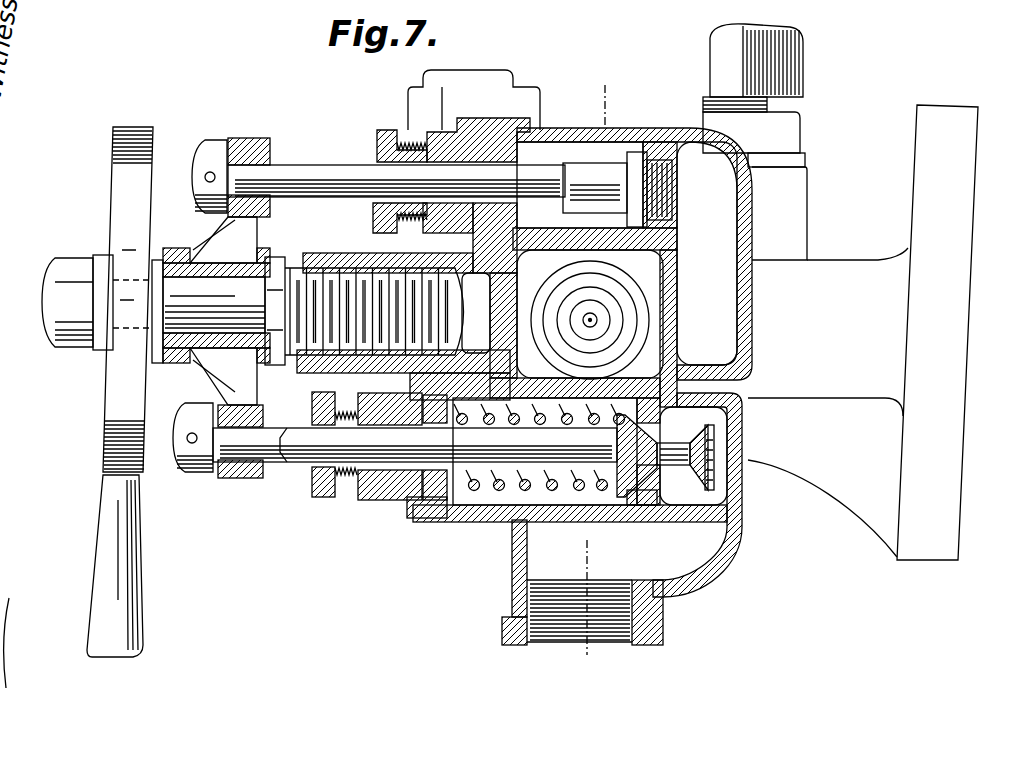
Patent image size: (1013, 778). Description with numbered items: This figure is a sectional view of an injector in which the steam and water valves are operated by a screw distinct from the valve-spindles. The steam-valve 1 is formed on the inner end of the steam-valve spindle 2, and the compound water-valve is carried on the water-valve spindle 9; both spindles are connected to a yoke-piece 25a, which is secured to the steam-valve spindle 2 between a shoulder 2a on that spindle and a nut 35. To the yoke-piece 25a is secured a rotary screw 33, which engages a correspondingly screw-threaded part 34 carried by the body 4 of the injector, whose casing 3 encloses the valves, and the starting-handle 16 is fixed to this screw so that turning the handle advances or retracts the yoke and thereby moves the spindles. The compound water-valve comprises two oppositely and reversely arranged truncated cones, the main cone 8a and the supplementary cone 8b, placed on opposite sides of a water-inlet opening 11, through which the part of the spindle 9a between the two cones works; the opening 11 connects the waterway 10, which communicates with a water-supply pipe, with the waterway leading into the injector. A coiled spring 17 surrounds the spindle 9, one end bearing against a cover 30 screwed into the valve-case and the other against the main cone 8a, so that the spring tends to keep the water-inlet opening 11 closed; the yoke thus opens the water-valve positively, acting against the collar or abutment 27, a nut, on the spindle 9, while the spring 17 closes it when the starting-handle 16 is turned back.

The steam-valve 1 is at (677, 187).
The steam-valve spindle 2 is at (396, 181).
The shoulder 2a is at (268, 158).
The valve casing 3 is at (590, 123).
The body of the injector 4 is at (558, 244).
The main cone 8a is at (637, 456).
The supplementary cone 8b is at (714, 440).
The water-valve spindle 9 is at (415, 445).
The part of the spindle between the two cones 9a is at (682, 447).
The waterway 10 is at (582, 582).
The water-inlet opening 11 is at (650, 486).
The starting-handle 16 is at (125, 523).
The coiled spring 17 is at (565, 420).
The yoke-piece 25a is at (192, 256).
The collar or abutment 27 is at (193, 473).
The cover 30 is at (422, 500).
The rotary screw 33 is at (323, 272).
The screw-threaded part 34 is at (416, 232).
The nut 35 is at (220, 134).